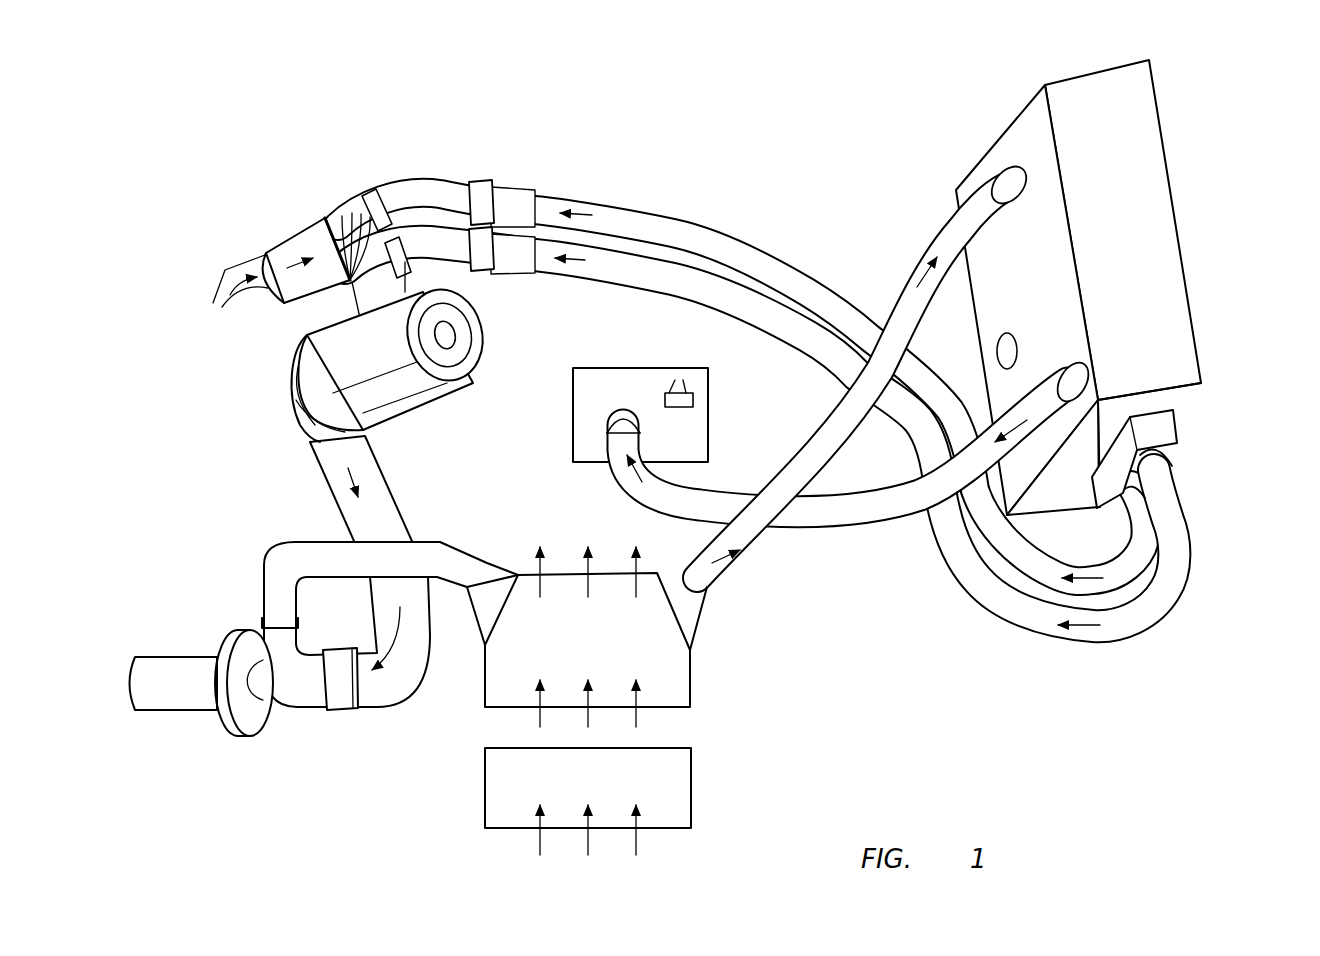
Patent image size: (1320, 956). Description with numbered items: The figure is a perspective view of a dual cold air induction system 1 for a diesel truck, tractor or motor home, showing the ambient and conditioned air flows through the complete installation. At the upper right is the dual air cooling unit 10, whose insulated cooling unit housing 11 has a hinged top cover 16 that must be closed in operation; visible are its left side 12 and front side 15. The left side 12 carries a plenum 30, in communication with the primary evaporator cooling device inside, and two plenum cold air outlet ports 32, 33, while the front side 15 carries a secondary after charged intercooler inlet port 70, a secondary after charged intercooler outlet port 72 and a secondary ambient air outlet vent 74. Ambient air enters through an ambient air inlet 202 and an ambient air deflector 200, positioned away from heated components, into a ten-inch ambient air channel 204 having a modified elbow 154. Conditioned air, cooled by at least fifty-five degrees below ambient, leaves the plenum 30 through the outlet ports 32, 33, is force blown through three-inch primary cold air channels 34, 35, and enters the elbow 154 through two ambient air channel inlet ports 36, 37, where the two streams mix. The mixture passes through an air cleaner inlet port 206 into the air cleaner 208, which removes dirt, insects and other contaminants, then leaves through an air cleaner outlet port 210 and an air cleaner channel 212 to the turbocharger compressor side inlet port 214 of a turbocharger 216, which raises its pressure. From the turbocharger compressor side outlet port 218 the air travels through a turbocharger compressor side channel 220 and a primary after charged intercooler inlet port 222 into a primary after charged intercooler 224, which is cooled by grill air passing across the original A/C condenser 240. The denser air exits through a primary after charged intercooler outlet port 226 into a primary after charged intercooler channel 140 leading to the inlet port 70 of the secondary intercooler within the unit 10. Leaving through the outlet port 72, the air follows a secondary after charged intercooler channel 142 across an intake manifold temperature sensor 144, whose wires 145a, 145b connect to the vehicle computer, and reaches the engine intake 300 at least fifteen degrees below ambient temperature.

The dual cold air induction system 1 is at (153, 196).
The dual air cooling unit 10 is at (1222, 82).
The cooling unit housing 11 is at (1057, 500).
The left side 12 is at (1183, 393).
The front side 15 is at (993, 288).
The hinged top cover 16 is at (1165, 228).
The plenum 30 is at (1178, 443).
The plenum cold air outlet port 32 is at (1170, 465).
The plenum cold air outlet port 33 is at (1137, 487).
The primary cold air channel 34 is at (967, 583).
The primary cold air channel 35 is at (1083, 563).
The ambient air channel inlet port 36 is at (759, 437).
The ambient air channel inlet port 37 is at (742, 361).
The secondary after charged intercooler inlet port 70 is at (1006, 163).
The secondary after charged intercooler outlet port 72 is at (1090, 380).
The secondary ambient air outlet vent 74 is at (998, 352).
The primary after charged intercooler channel 140 is at (843, 433).
The secondary after charged intercooler channel 142 is at (833, 530).
The intake manifold temperature sensor 144 is at (693, 407).
The wire 145a is at (677, 382).
The wire 145b is at (690, 390).
The modified elbow 154 is at (333, 213).
The ambient air deflector 200 is at (237, 267).
The ambient air inlet 202 is at (267, 297).
The ambient air channel 204 is at (287, 240).
The air cleaner inlet port 206 is at (363, 297).
The air cleaner 208 is at (397, 397).
The air cleaner outlet port 210 is at (290, 410).
The air cleaner channel 212 is at (327, 480).
The turbocharger compressor side inlet port 214 is at (340, 697).
The turbocharger 216 is at (310, 700).
The turbocharger compressor side outlet port 218 is at (273, 617).
The turbocharger compressor side channel 220 is at (442, 557).
The primary after charged intercooler inlet port 222 is at (493, 573).
The primary after charged intercooler 224 is at (490, 692).
The primary after charged intercooler outlet port 226 is at (693, 607).
The original A/C condenser 240 is at (693, 787).
The engine intake 300 is at (607, 372).